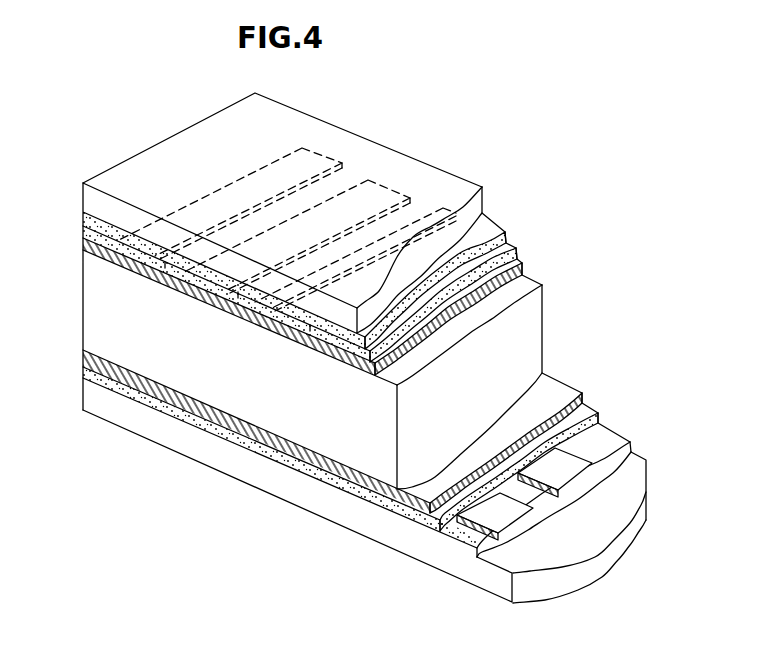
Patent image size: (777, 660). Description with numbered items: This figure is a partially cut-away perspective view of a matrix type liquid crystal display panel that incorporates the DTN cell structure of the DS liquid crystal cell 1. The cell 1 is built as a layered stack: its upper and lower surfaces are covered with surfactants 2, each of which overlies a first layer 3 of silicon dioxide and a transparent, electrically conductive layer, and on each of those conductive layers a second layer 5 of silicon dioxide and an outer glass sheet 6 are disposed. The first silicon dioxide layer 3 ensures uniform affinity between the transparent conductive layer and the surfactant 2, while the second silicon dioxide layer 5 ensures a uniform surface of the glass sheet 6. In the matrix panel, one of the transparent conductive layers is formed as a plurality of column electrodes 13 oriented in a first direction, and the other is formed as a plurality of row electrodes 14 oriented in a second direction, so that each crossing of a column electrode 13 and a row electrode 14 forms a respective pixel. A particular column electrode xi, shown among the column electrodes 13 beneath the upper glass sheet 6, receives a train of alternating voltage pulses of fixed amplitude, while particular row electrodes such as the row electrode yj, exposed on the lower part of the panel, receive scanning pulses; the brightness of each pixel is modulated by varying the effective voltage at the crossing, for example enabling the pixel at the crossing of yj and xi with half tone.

The liquid crystal cell 1 is at (533, 311).
The surfactant 2 is at (522, 270).
The layer of SiO2 3 is at (519, 253).
The layer of SiO2 5 is at (505, 233).
The glass sheet 6 is at (268, 110).
The column electrodes 13 is at (373, 164).
The row electrodes 14 is at (581, 548).
The column electrode x_i xi is at (318, 157).
The row electrode y_j yj is at (497, 517).